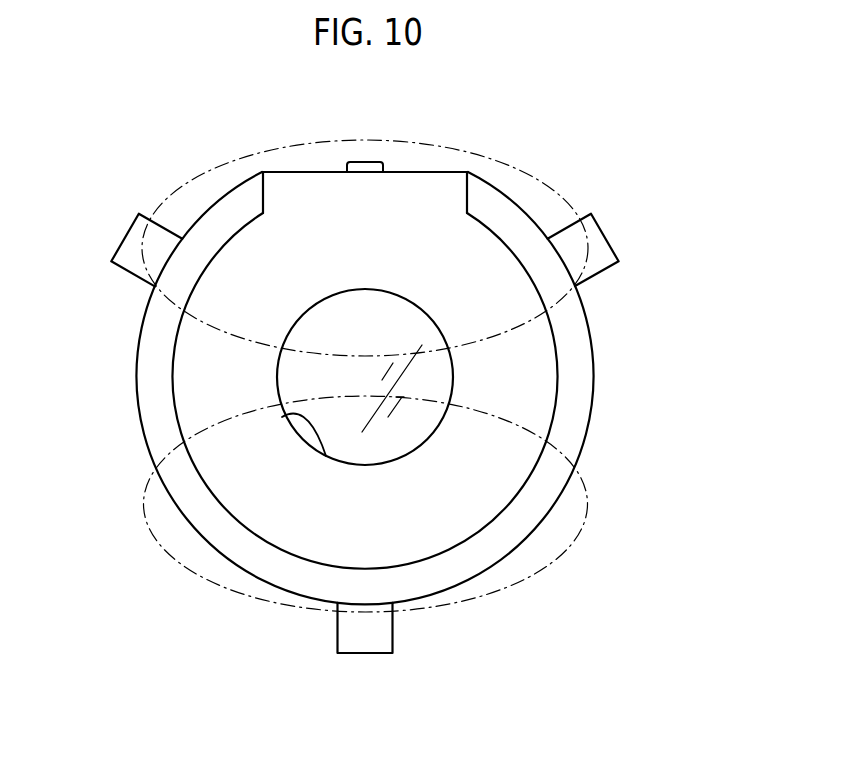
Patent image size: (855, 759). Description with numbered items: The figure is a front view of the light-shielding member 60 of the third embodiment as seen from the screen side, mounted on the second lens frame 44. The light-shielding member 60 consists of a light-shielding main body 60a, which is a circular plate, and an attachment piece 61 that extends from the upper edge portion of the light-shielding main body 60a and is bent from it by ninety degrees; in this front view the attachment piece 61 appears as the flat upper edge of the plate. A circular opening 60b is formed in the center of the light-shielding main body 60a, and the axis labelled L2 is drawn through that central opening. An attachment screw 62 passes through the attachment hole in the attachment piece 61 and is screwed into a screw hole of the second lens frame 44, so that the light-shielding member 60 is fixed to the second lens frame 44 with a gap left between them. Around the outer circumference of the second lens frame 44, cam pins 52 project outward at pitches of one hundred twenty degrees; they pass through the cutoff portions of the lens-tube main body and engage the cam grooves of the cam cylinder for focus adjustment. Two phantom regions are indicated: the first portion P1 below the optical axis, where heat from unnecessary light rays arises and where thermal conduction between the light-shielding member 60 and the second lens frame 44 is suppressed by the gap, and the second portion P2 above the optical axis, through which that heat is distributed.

The second lens frame 44 is at (590, 342).
The cam pins 52 is at (600, 223).
The light-shielding member 60 is at (374, 319).
The light-shielding main body 60a is at (543, 377).
The circular opening 60b is at (282, 417).
The attachment piece 61 is at (293, 171).
The attachment screw 62 is at (367, 163).
The second optical axis L2 is at (297, 388).
The first portion P1 is at (530, 578).
The second portion P2 is at (530, 173).